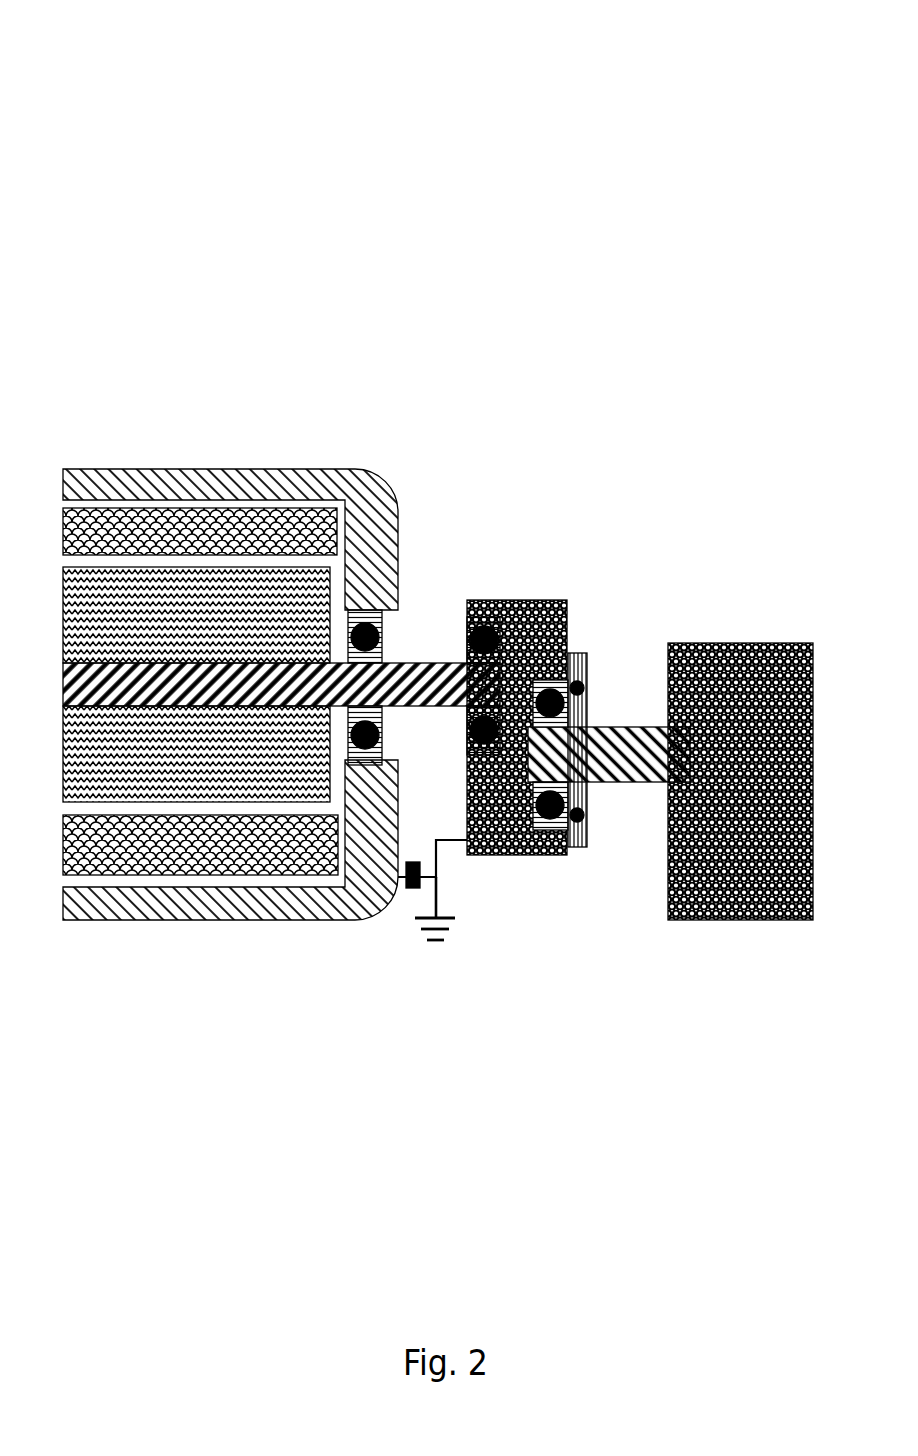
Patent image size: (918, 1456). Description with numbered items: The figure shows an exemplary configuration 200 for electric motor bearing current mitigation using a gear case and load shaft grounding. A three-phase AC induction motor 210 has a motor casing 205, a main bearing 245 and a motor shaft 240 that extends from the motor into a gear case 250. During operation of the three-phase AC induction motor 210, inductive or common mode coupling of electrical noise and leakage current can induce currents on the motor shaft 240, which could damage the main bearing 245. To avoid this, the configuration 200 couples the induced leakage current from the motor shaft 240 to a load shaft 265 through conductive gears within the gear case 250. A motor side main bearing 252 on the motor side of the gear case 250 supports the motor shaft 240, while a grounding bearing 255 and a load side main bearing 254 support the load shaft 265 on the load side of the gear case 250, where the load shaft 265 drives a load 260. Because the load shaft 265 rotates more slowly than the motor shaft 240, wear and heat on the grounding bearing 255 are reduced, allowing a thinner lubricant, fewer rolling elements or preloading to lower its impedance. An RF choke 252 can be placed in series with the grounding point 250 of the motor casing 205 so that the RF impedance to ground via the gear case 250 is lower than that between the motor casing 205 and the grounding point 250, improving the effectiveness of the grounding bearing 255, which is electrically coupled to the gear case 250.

The exemplary configuration 200 is at (491, 37).
The motor casing 205 is at (234, 616).
The three-phase AC induction motor 210 is at (89, 468).
The motor shaft 240 is at (441, 660).
The main bearing 245 is at (372, 605).
The gear case 250 is at (517, 597).
The motor side main bearing 252 is at (484, 607).
The load side main bearing 254 is at (553, 838).
The grounding bearing 255 is at (577, 650).
The load 260 is at (758, 638).
The load shaft 265 is at (631, 720).